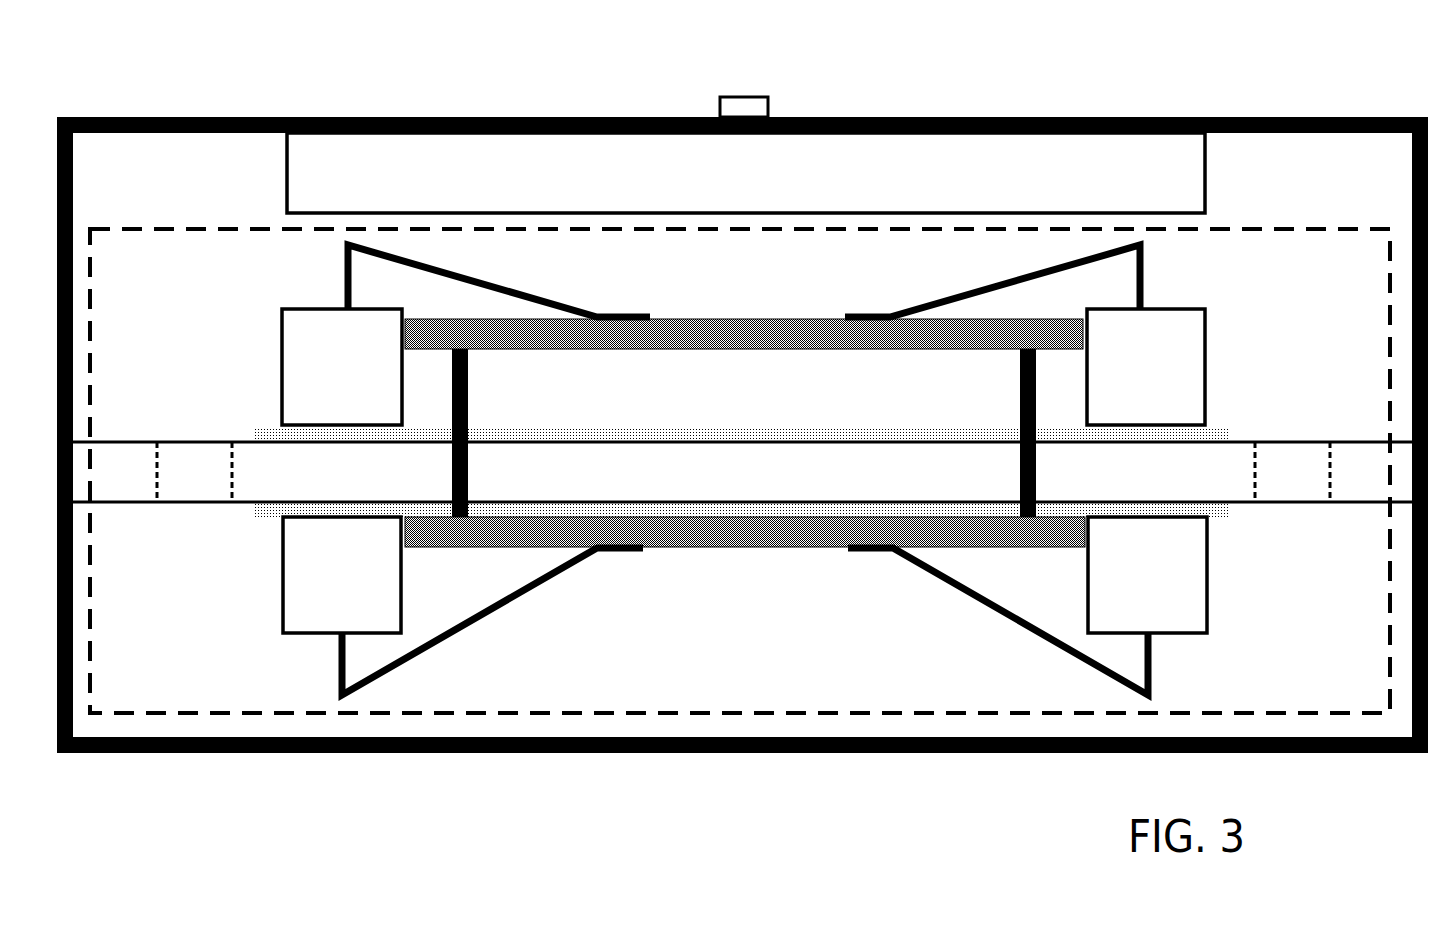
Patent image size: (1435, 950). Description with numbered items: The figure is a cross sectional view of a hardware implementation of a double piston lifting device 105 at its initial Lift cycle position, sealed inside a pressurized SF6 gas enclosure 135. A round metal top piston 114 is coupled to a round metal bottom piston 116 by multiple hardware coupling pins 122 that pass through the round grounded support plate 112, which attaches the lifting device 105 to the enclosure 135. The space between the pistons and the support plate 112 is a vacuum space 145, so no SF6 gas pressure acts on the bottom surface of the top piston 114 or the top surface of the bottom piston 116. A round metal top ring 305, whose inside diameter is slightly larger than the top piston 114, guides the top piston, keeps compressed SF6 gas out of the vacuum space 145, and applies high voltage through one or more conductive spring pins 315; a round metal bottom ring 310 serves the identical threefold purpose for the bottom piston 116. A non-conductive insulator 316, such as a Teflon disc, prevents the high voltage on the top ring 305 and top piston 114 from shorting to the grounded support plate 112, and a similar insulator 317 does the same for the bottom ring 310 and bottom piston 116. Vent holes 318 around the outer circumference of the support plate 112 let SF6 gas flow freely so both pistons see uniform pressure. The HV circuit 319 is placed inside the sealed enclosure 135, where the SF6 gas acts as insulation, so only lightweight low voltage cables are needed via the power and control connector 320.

The double piston lifting device 105 is at (175, 229).
The pressurized SF6 gas enclosure 135 is at (252, 120).
The HV circuit 319 is at (520, 168).
The power and control connector 320 is at (745, 97).
The conductive spring pins 315 is at (345, 278).
The top ring 305 is at (282, 345).
The bottom ring 310 is at (283, 602).
The vent holes 318 is at (178, 440).
The non-conductive insulator 316 is at (255, 437).
The non-conductive insulator 317 is at (255, 510).
The hardware coupling pins 122 is at (468, 392).
The vacuum space 145 is at (745, 370).
The top piston 114 is at (787, 318).
The bottom piston 116 is at (693, 547).
The grounded support plate 112 is at (858, 470).